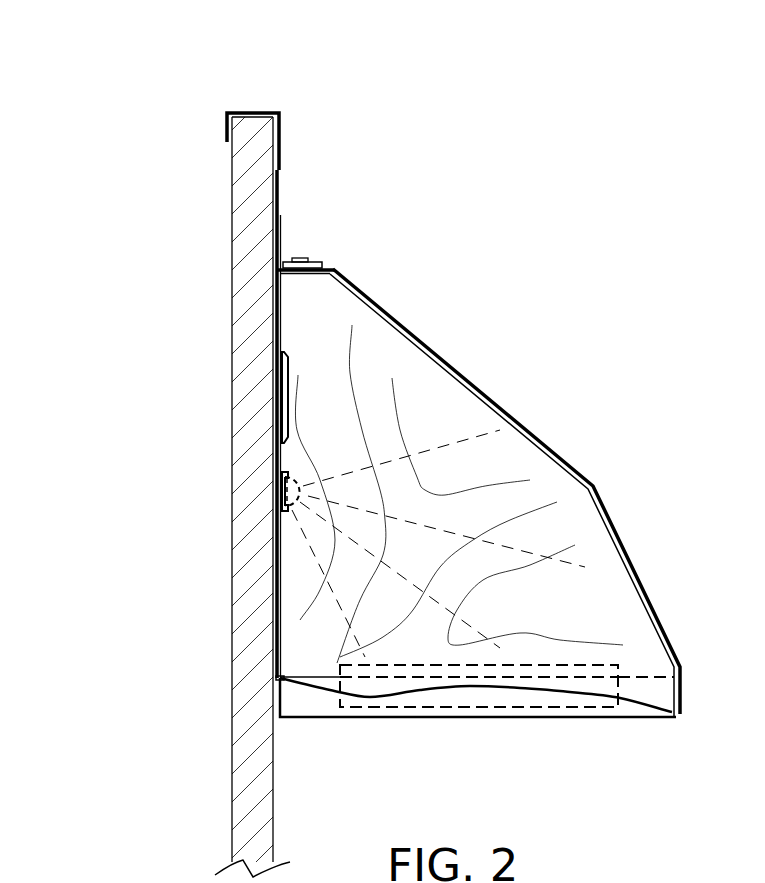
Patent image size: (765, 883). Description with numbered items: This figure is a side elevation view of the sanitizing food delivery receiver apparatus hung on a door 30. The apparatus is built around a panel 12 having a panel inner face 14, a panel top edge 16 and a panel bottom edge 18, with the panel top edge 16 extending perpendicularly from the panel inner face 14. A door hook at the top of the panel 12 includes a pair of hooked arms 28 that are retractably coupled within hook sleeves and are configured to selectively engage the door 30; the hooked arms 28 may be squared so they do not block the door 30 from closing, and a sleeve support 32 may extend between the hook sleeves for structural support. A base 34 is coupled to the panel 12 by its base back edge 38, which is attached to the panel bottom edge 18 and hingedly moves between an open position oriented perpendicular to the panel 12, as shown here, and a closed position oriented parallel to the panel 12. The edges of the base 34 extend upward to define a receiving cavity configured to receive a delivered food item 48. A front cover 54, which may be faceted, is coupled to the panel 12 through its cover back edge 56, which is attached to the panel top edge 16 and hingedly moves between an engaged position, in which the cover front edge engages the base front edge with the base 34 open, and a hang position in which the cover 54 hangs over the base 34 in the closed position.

The panel 12 is at (275, 543).
The panel inner face 14 is at (290, 397).
The panel top edge 16 is at (318, 266).
The panel bottom edge 18 is at (275, 680).
The hooked arms 28 is at (253, 112).
The door 30 is at (240, 323).
The sleeve support 32 is at (277, 214).
The base 34 is at (317, 708).
The base back edge 38 is at (278, 698).
The delivered food item 48 is at (542, 698).
The front cover 54 is at (568, 460).
The cover back edge 56 is at (333, 269).